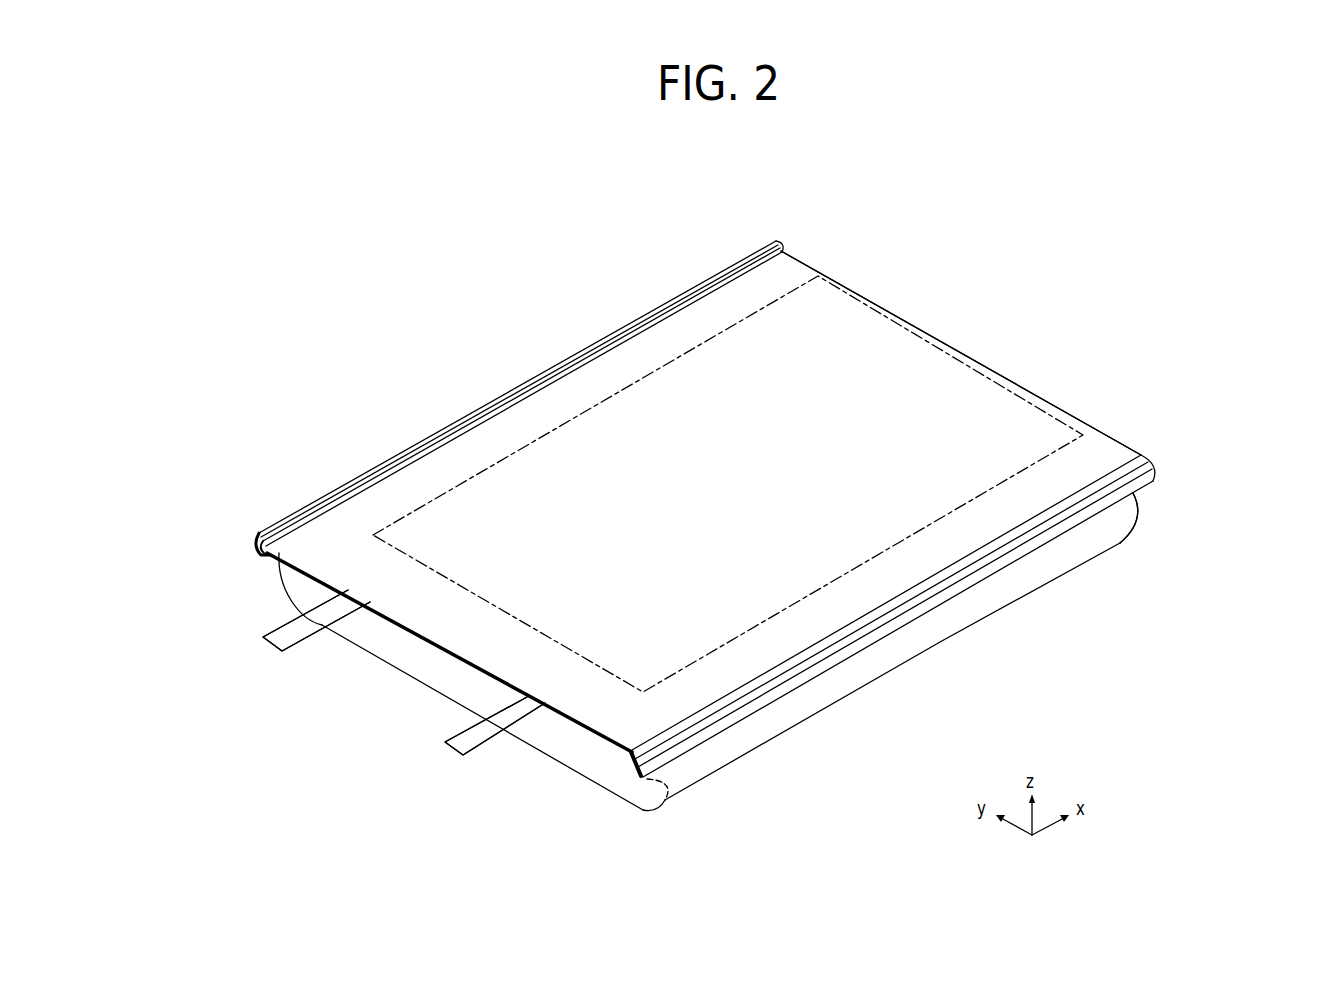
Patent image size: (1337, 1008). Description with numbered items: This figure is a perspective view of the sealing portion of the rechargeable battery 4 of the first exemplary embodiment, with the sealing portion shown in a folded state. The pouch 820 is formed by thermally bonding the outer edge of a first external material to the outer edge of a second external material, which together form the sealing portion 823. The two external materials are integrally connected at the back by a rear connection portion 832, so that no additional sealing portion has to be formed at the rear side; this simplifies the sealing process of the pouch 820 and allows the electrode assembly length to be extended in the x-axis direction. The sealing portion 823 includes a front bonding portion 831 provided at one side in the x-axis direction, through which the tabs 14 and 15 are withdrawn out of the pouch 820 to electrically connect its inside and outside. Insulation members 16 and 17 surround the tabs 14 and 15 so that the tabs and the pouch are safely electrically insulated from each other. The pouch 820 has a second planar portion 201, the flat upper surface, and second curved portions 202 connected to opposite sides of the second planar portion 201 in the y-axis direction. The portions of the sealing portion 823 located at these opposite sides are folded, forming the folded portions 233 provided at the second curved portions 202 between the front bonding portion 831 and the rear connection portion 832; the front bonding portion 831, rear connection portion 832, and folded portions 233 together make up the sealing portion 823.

The rechargeable battery 4 is at (495, 244).
The tab 14 is at (280, 641).
The tab 15 is at (445, 748).
The insulation member 16 is at (333, 607).
The insulation member 17 is at (515, 712).
The second planar portion 201 is at (757, 572).
The second curved portion 202 is at (278, 577).
The folded portion 233 is at (610, 823).
The pouch 820 is at (1146, 511).
The sealing portion 823 is at (1201, 744).
The front bonding portion 831 is at (475, 628).
The rear connection portion 832 is at (945, 348).